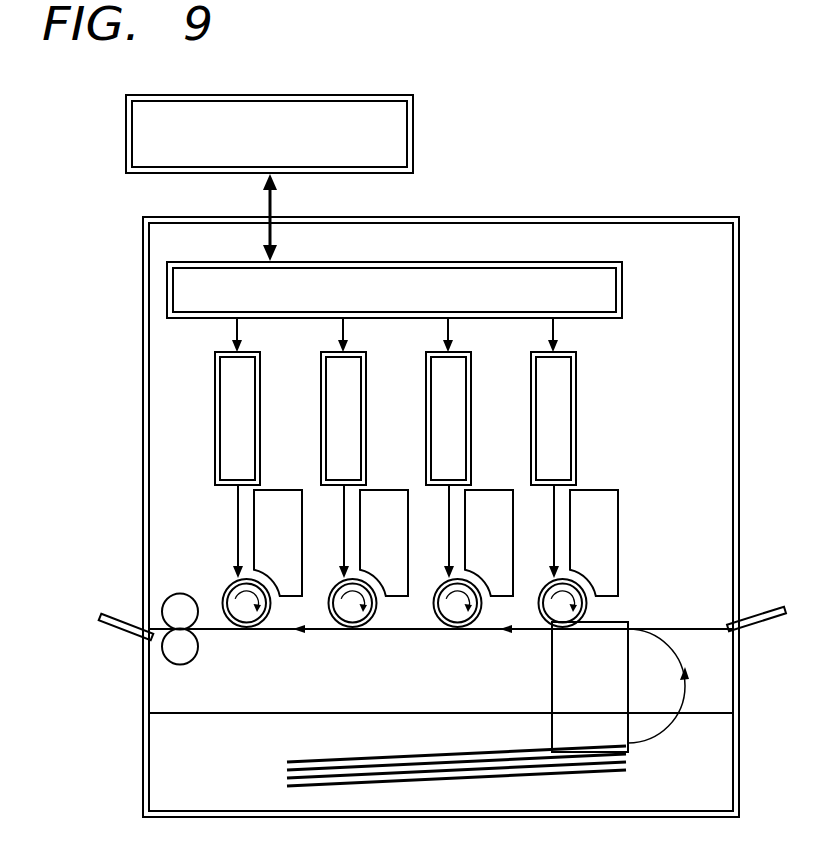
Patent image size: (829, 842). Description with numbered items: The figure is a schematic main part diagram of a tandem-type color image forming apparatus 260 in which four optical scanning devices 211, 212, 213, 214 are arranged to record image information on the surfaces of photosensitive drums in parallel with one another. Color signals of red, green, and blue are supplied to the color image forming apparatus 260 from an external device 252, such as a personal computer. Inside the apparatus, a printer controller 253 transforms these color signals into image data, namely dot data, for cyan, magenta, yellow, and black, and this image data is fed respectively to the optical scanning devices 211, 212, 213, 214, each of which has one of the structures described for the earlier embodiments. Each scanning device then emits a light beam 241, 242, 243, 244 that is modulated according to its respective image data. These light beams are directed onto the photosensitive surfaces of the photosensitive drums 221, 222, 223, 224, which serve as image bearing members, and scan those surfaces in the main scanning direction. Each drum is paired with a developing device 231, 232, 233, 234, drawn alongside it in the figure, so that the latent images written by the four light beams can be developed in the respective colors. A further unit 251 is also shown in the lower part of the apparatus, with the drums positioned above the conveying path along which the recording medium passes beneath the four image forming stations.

The optical scanning device 211 is at (215, 410).
The optical scanning device 212 is at (321, 410).
The optical scanning device 213 is at (426, 410).
The optical scanning device 214 is at (531, 410).
The photosensitive drum 221 is at (226, 630).
The photosensitive drum 222 is at (332, 630).
The photosensitive drum 223 is at (437, 630).
The photosensitive drum 224 is at (542, 630).
The developing device 231 is at (284, 500).
The developing device 232 is at (390, 500).
The developing device 233 is at (496, 500).
The developing device 234 is at (602, 500).
The light beam 241 is at (237, 530).
The light beam 242 is at (342, 538).
The light beam 243 is at (448, 538).
The light beam 244 is at (553, 538).
The fixing device 251 is at (677, 640).
The external device 252 is at (413, 113).
The printer controller 253 is at (622, 282).
The color image forming apparatus 260 is at (675, 210).